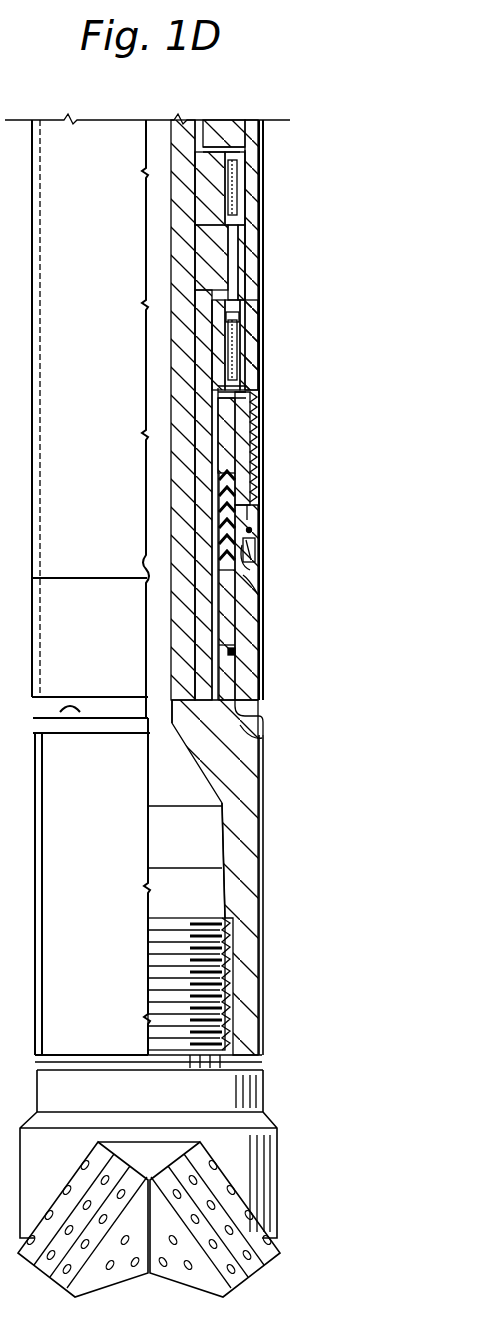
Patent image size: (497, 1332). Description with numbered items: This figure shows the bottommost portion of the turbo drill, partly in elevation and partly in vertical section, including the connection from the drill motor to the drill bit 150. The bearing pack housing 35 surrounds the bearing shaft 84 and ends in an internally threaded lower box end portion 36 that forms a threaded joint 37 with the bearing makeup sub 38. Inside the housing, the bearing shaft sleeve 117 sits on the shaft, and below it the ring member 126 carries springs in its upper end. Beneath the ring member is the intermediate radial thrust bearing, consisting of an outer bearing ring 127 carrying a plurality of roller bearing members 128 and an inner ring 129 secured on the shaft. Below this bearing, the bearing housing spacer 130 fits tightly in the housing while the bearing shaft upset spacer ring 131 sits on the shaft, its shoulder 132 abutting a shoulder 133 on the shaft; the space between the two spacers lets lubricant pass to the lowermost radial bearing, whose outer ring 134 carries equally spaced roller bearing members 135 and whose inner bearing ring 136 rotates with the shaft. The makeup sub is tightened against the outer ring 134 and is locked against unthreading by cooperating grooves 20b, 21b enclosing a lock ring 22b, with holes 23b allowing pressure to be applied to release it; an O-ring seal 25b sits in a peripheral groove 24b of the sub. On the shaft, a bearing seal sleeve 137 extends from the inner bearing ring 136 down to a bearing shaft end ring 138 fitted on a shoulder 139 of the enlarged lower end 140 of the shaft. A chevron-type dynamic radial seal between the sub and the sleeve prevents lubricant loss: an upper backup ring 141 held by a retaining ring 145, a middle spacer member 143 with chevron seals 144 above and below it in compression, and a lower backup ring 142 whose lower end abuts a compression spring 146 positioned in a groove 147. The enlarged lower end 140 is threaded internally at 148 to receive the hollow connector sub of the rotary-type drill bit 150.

The bearing shaft sleeve 117 is at (195, 145).
The ring member 126 is at (235, 143).
The roller bearing members 128 is at (234, 165).
The outer bearing ring 127 is at (247, 188).
The bearing pack housing 35 is at (256, 212).
The inner ring 129 is at (203, 198).
The bearing shaft 84 is at (182, 216).
The bearing housing spacer 130 is at (243, 242).
The bearing shaft upset spacer ring 131 is at (200, 246).
The shoulder on the bearing shaft 133 is at (233, 272).
The shoulder 132 is at (222, 286).
The outer ring 134 is at (237, 325).
The inner bearing ring 136 is at (212, 345).
The roller bearing members 135 is at (233, 347).
The retaining ring 145 is at (246, 395).
The upper backup ring 141 is at (226, 418).
The bearing seal sleeve 137 is at (214, 440).
The threaded joint 37 is at (255, 447).
The lower box end portion 36 is at (262, 472).
The chevron seals 144 is at (226, 485).
The O-ring seal 25b is at (247, 515).
The peripheral groove 24b is at (251, 530).
The spacer member 143 is at (228, 520).
The groove 20b is at (255, 545).
The holes 23b is at (252, 564).
The lock ring 22b is at (252, 566).
The groove 21b is at (250, 595).
The bearing makeup sub 38 is at (250, 630).
The groove 147 is at (230, 650).
The lower backup ring 142 is at (236, 655).
The compression spring 146 is at (238, 672).
The bearing shaft end ring 138 is at (242, 713).
The shoulder 139 is at (255, 744).
The enlarged lower end 140 is at (250, 837).
The internal threads 148 is at (225, 982).
The drill bit 150 is at (276, 1190).